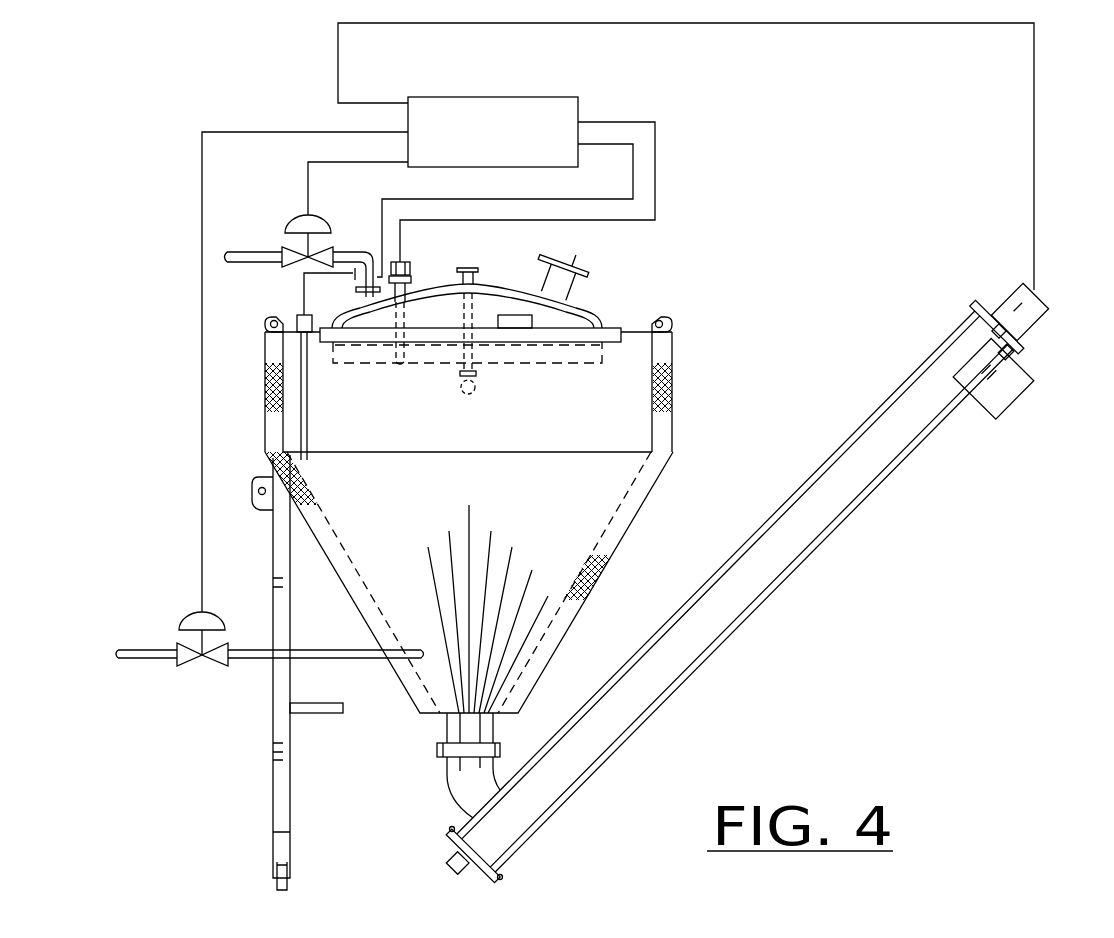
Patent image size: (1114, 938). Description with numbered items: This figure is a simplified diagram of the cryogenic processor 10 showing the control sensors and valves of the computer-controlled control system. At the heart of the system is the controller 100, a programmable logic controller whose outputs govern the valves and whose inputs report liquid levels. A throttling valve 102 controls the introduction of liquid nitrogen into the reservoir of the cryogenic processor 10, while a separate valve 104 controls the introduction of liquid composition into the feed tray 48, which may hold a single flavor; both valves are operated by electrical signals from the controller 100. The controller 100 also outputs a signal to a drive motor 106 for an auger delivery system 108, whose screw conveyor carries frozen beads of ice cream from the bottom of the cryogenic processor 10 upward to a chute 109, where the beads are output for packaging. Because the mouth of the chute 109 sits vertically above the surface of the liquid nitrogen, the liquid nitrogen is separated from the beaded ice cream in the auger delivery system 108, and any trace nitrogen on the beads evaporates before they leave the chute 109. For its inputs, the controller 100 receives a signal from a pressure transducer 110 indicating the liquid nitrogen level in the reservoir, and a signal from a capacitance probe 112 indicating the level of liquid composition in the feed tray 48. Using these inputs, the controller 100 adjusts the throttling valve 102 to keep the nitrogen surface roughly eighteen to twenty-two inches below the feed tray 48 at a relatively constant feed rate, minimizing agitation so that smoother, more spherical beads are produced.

The cryogenic processor 10 is at (705, 288).
The feed tray 48 is at (578, 365).
The controller 100 is at (473, 97).
The throttling valve 102 is at (178, 610).
The valve 104 is at (290, 226).
The drive motor 106 is at (1040, 318).
The auger delivery system 108 is at (743, 625).
The chute 109 is at (1002, 432).
The pressure transducer 110 is at (300, 315).
The capacitance probe 112 is at (403, 262).